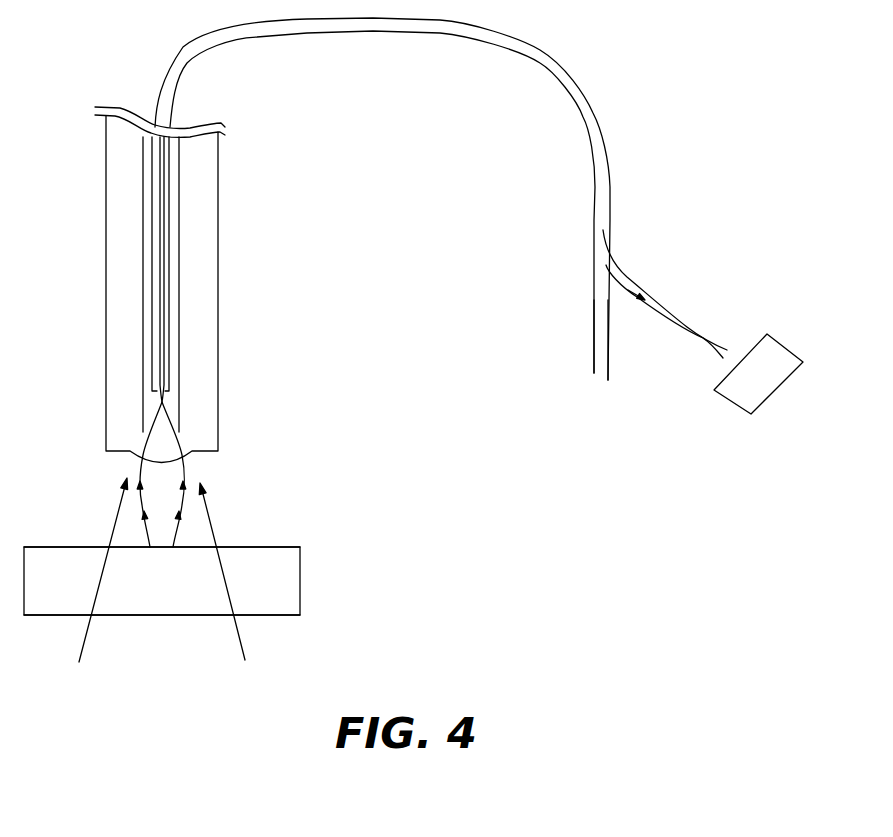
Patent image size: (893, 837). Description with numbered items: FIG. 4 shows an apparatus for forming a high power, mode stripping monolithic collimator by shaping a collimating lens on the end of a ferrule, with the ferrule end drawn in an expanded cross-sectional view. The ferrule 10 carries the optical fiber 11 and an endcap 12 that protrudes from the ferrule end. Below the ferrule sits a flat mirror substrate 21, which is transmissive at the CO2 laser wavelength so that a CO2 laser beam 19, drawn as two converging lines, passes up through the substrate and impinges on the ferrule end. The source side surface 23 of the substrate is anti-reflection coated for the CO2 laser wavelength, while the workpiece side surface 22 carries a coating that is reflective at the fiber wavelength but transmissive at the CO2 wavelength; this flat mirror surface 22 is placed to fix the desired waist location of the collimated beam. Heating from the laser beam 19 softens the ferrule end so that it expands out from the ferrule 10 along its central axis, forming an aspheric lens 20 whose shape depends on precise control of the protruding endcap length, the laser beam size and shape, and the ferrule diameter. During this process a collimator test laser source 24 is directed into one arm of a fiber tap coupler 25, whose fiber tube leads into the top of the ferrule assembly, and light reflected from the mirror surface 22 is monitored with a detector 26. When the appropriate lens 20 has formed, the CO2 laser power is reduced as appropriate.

The ferrule 10 is at (200, 255).
The optical fiber 11 is at (178, 302).
The endcap 12 is at (178, 400).
The CO2 laser beam 19 is at (256, 658).
The aspheric lens 20 is at (201, 460).
The flat mirror substrate 21 is at (307, 581).
The workpiece side surface 22 is at (308, 545).
The source side surface 23 is at (309, 618).
The collimator test laser source 24 is at (601, 360).
The fiber tap coupler 25 is at (624, 250).
The detector 26 is at (720, 412).